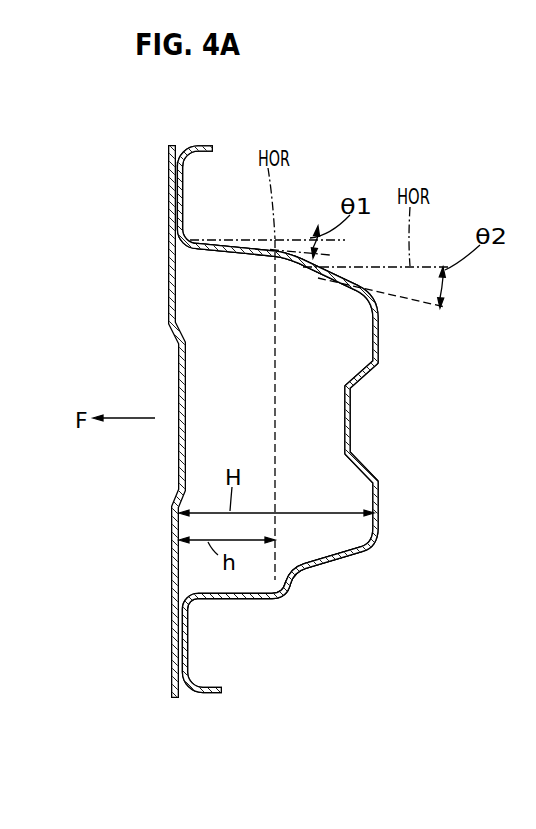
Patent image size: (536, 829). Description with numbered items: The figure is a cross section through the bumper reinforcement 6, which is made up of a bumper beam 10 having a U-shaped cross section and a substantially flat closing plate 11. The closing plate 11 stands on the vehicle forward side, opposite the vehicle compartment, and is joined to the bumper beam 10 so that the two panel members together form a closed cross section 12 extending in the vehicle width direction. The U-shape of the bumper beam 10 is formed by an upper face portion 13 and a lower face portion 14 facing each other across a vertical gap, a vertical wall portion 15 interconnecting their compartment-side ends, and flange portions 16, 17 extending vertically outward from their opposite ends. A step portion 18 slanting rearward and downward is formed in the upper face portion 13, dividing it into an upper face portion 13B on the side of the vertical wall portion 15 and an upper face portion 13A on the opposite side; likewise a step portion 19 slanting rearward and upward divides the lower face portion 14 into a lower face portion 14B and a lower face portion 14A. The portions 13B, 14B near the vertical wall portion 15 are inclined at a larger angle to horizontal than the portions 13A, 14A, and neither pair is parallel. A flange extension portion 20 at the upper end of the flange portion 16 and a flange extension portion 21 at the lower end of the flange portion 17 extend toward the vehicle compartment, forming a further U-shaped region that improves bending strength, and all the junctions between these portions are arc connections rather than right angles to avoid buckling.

The bumper reinforcement 6 is at (137, 260).
The bumper beam 10 is at (353, 423).
The closing plate 11 is at (170, 310).
The closed cross section 12 is at (240, 409).
The upper face portion 13 is at (247, 254).
The upper face portion 13A is at (228, 256).
The upper face portion 13B is at (334, 285).
The lower face portion 14 is at (252, 600).
The lower face portion 14A is at (225, 602).
The lower face portion 14B is at (345, 564).
The vertical wall portion 15 is at (380, 338).
The flange portion 16 is at (183, 193).
The flange portion 17 is at (187, 653).
The step portion 18 is at (285, 267).
The step portion 19 is at (292, 567).
The flange extension portion 20 is at (202, 146).
The flange extension portion 21 is at (212, 700).